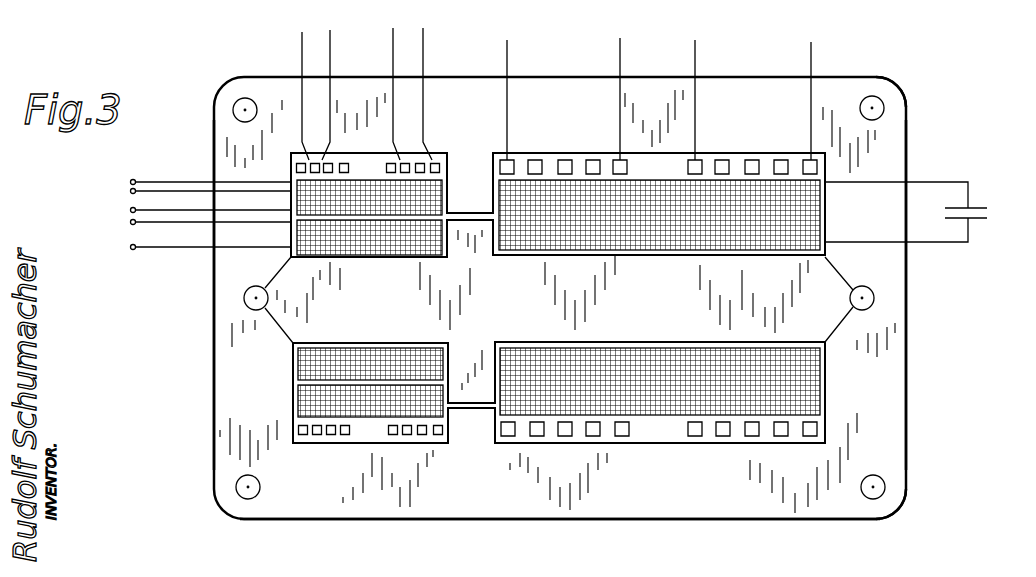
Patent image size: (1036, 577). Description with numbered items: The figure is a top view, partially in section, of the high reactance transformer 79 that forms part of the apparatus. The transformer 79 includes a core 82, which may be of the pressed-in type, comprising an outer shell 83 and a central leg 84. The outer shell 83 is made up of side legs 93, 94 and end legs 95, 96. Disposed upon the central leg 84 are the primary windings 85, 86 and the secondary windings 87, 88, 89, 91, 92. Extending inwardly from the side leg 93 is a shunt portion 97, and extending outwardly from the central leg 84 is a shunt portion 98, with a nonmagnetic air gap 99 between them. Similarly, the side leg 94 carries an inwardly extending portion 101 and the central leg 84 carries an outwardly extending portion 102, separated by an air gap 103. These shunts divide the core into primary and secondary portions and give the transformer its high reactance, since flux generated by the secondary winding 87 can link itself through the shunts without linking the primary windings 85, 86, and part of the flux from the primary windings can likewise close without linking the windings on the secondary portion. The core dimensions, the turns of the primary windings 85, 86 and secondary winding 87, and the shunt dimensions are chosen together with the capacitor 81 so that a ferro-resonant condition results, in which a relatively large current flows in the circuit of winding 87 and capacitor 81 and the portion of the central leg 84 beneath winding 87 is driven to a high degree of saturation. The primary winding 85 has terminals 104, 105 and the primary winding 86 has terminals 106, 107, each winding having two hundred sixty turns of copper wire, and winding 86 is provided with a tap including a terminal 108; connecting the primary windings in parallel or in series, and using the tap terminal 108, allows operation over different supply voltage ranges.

The transformer 79 is at (962, 76).
The capacitor 81 is at (985, 205).
The core 82 is at (866, 71).
The outer shell 83 is at (906, 110).
The central leg 84 is at (828, 310).
The primary winding 85 is at (305, 363).
The primary winding 86 is at (305, 398).
The secondary winding 87 is at (807, 390).
The secondary winding 88 is at (752, 160).
The secondary winding 89 is at (562, 160).
The secondary winding 91 is at (406, 160).
The secondary winding 92 is at (316, 160).
The side leg 93 is at (823, 90).
The side leg 94 is at (826, 503).
The end leg 95 is at (883, 160).
The end leg 96 is at (226, 276).
The shunt portion 97 is at (468, 197).
The shunt portion 98 is at (457, 232).
The air gap 99 is at (482, 210).
The inwardly extending portion 101 is at (458, 418).
The outwardly extending portion 102 is at (483, 383).
The air gap 103 is at (472, 392).
The terminal 104 is at (130, 249).
The terminal 105 is at (130, 224).
The terminal 106 is at (130, 210).
The terminal 107 is at (130, 181).
The terminal 108 is at (130, 191).